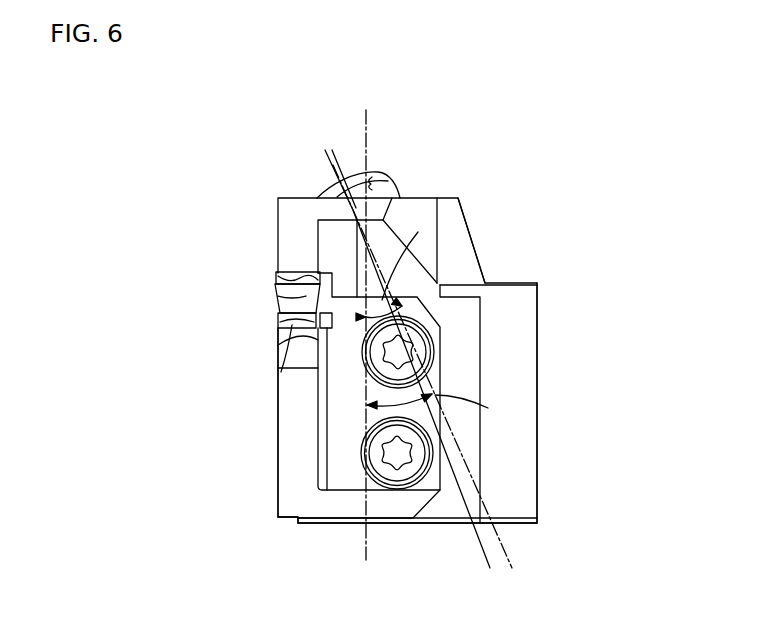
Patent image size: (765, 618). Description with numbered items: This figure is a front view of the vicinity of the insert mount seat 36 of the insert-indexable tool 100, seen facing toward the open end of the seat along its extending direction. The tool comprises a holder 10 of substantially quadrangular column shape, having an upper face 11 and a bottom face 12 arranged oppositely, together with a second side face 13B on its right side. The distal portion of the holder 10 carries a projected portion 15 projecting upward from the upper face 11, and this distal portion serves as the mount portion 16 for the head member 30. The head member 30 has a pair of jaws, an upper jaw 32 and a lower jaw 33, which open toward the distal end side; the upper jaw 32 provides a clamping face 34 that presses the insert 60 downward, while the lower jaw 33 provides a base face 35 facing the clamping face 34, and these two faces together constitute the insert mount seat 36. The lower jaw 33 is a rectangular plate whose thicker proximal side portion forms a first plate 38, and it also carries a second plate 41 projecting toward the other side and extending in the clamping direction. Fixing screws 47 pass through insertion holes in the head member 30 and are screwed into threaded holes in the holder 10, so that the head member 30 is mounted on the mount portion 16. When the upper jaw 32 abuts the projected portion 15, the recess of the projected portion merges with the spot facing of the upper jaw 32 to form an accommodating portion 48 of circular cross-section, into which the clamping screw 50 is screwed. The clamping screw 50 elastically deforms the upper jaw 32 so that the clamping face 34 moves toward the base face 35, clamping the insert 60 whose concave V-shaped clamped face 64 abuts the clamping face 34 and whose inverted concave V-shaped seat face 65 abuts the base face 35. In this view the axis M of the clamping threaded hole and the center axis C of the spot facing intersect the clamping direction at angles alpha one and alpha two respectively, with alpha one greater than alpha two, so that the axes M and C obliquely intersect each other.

The insert-indexable tool 100 is at (176, 166).
The holder 10 is at (524, 153).
The upper face 11 is at (522, 285).
The bottom face 12 is at (345, 525).
The second side face 13B is at (539, 425).
The projected portion 15 is at (458, 228).
The mount portion 16 is at (540, 250).
The head member 30 is at (283, 526).
The upper jaw 32 is at (286, 207).
The lower jaw 33 is at (282, 372).
The clamping face 34 is at (277, 293).
The base face 35 is at (277, 315).
The insert mount seat 36 is at (220, 348).
The first plate 38 is at (337, 475).
The second plate 41 is at (283, 455).
The fixing screws 47 is at (410, 355).
The accommodating portion 48 is at (408, 176).
The clamping screw 50 is at (384, 166).
The insert 60 is at (218, 298).
The clamped face 64 is at (300, 272).
The seat face 65 is at (282, 338).
The axis of the clamping threaded hole M is at (514, 565).
The center axis of the spot facing C is at (480, 548).